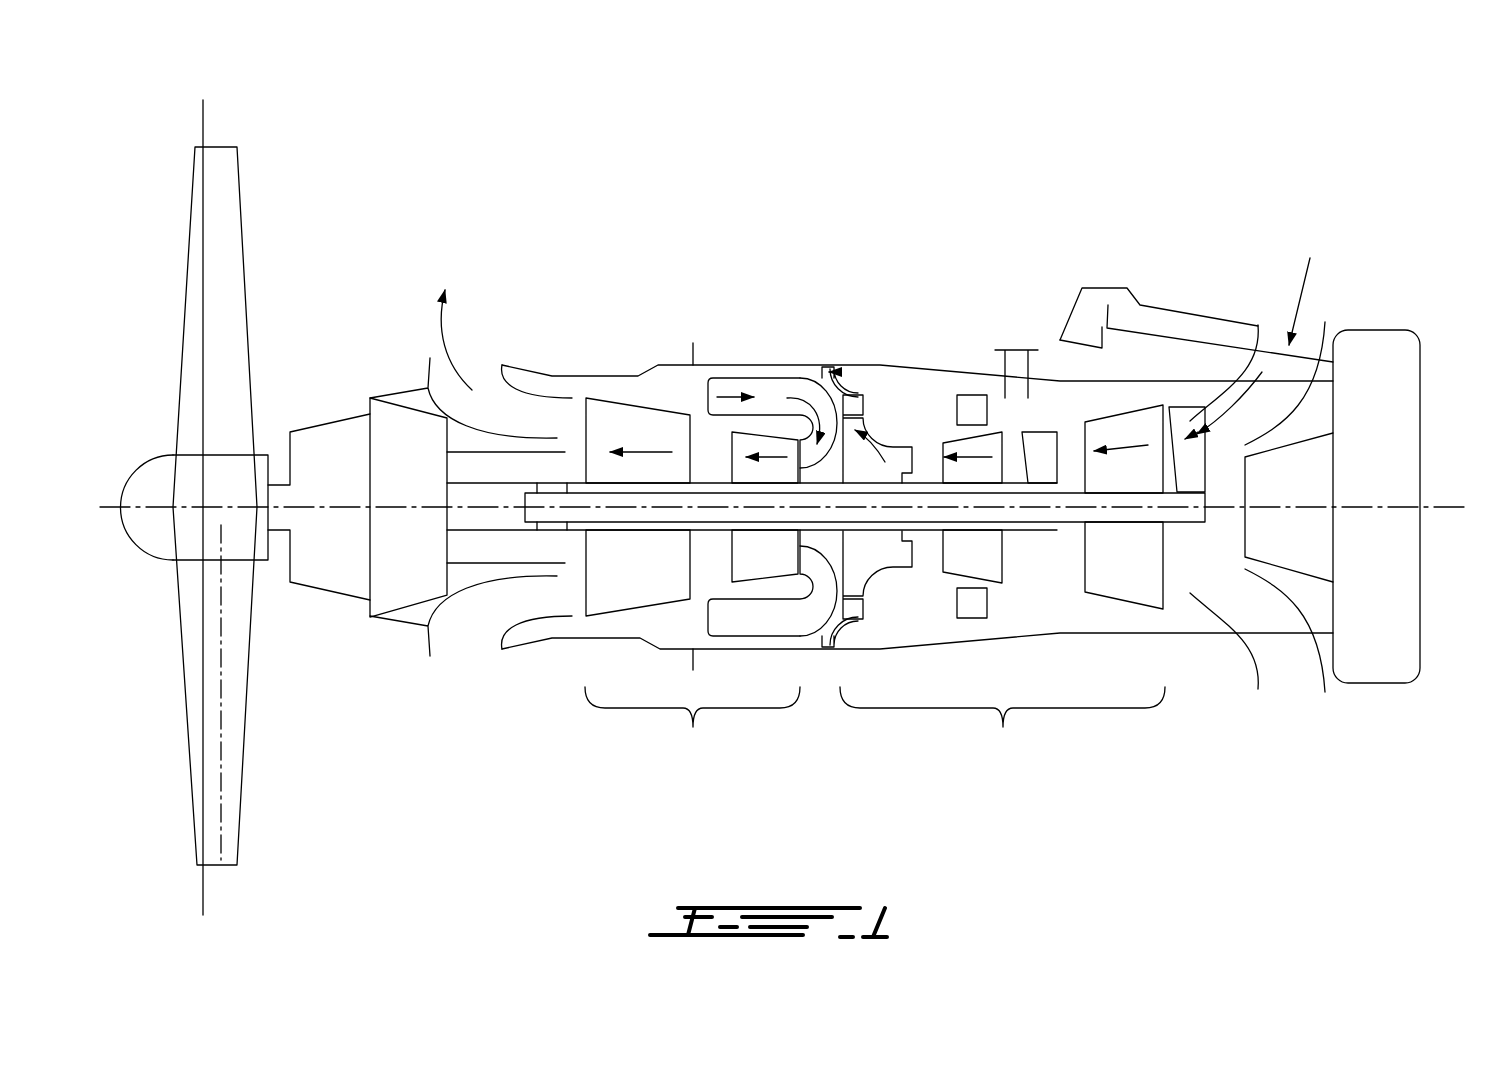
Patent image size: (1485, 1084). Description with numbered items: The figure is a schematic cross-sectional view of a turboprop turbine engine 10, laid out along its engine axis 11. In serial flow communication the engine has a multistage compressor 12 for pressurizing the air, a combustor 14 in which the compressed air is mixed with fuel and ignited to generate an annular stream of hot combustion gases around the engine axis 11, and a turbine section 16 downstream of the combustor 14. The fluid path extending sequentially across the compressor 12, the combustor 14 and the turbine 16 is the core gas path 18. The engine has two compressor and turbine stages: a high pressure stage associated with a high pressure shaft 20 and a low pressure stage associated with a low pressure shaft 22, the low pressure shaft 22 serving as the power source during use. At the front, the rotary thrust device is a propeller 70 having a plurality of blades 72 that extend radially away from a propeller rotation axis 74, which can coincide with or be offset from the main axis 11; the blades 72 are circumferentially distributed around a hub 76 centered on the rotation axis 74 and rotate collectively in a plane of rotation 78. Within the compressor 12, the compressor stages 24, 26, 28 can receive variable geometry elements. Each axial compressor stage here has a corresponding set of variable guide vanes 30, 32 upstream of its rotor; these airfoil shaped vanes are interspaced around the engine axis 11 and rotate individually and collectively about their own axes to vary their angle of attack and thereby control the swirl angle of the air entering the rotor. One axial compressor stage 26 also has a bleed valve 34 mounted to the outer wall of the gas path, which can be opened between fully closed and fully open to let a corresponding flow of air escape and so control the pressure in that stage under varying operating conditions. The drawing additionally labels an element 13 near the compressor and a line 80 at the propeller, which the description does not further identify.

The turbine engine 10 is at (318, 170).
The engine axis 11 is at (1442, 500).
The multistage compressor 12 is at (1077, 491).
The compressor rotor blade 13 is at (660, 430).
The combustor 14 is at (783, 378).
The turbine section 16 is at (711, 476).
The core gas path 18 is at (455, 650).
The high pressure shaft 20 is at (929, 536).
The low pressure shaft 22 is at (1118, 541).
The compressor stage 24 is at (1140, 400).
The axial compressor stage 26 is at (978, 573).
The compressor stage 28 is at (893, 570).
The variable guide vanes 30 is at (1043, 452).
The variable guide vanes 32 is at (1199, 414).
The bleed valve 34 is at (972, 395).
The propeller 70 is at (240, 507).
The blades 72 is at (222, 290).
The propeller rotation axis 74 is at (142, 500).
The hub 76 is at (190, 540).
The plane of rotation 78 is at (203, 255).
The pitch axis 80 is at (220, 757).